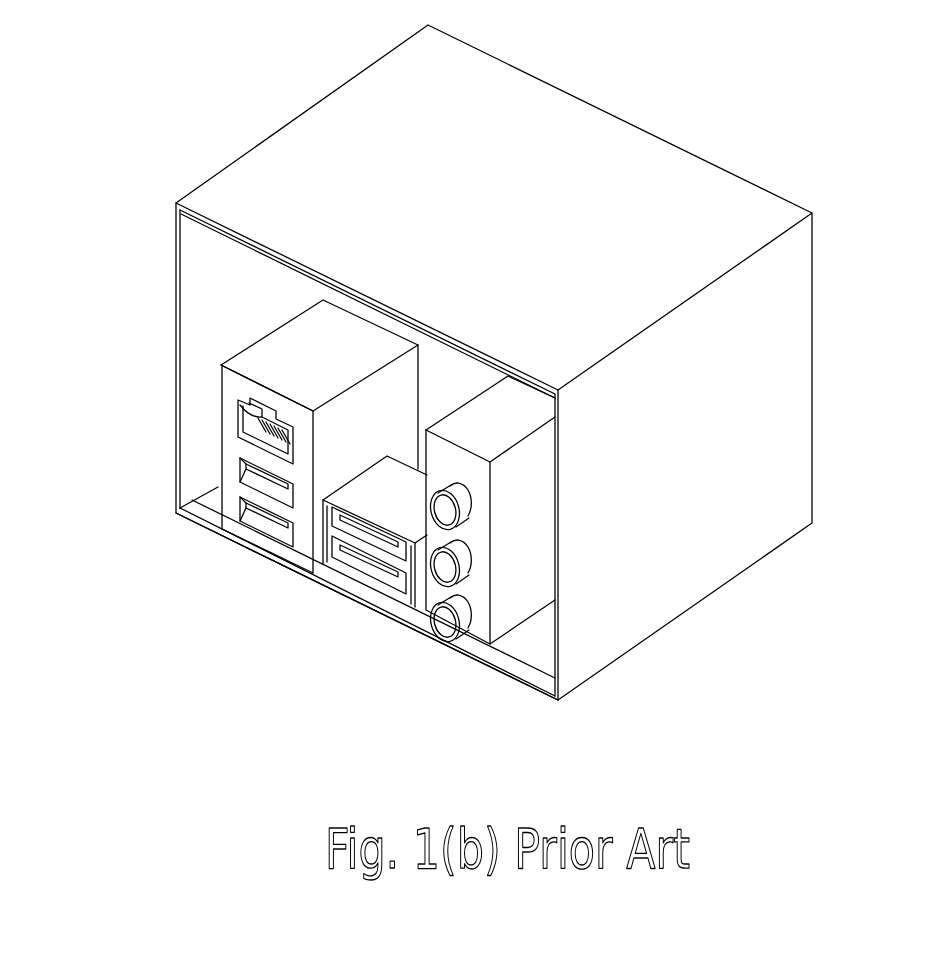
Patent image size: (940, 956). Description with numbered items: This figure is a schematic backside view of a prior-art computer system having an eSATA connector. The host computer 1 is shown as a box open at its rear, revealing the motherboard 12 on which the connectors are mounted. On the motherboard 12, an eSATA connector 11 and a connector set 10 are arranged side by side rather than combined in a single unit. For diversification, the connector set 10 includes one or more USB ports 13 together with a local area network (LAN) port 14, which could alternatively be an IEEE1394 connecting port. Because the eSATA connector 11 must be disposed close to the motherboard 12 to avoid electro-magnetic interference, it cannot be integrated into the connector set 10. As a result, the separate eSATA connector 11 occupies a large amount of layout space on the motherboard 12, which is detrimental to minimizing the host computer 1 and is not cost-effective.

The host computer 1 is at (912, 75).
The connector set 10 is at (220, 393).
The eSATA connector 11 is at (362, 553).
The motherboard 12 is at (533, 640).
The USB ports 13 is at (242, 473).
The local area network (LAN) port 14 is at (242, 420).